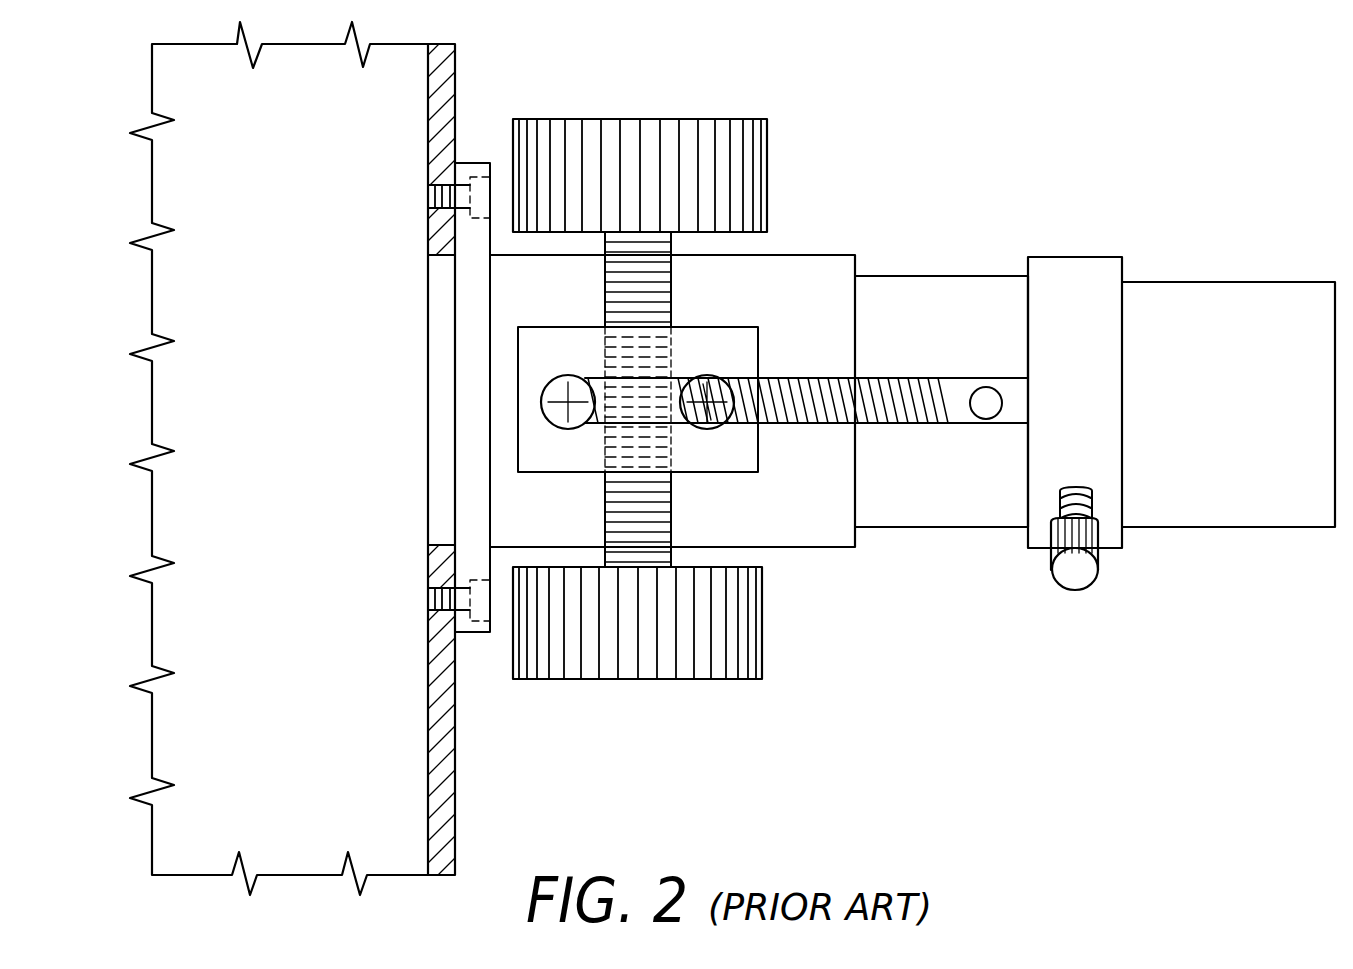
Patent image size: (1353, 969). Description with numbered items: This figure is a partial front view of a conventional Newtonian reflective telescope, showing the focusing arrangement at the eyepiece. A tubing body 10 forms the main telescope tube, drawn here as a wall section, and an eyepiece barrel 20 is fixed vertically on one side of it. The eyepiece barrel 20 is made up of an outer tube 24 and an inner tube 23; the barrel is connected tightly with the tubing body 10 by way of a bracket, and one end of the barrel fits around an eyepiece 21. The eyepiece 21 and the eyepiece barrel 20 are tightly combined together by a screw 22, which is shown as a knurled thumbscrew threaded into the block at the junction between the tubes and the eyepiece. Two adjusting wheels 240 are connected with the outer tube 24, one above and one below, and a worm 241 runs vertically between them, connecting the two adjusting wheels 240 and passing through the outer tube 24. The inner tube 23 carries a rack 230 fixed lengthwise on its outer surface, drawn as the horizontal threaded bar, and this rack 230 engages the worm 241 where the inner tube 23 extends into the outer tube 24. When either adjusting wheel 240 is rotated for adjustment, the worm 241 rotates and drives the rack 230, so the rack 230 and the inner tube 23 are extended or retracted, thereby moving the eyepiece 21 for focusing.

The tubing body 10 is at (433, 782).
The eyepiece barrel 20 is at (759, 468).
The eyepiece 21 is at (1228, 488).
The screw 22 is at (1078, 562).
The inner tube 23 is at (963, 495).
The rack 230 is at (918, 398).
The outer tube 24 is at (810, 513).
The adjusting wheels 240 is at (720, 185).
The worm 241 is at (608, 508).